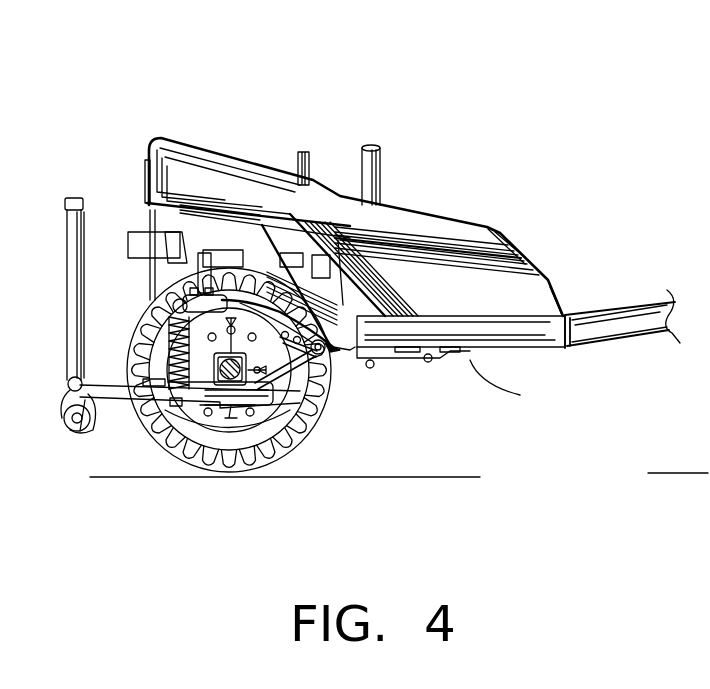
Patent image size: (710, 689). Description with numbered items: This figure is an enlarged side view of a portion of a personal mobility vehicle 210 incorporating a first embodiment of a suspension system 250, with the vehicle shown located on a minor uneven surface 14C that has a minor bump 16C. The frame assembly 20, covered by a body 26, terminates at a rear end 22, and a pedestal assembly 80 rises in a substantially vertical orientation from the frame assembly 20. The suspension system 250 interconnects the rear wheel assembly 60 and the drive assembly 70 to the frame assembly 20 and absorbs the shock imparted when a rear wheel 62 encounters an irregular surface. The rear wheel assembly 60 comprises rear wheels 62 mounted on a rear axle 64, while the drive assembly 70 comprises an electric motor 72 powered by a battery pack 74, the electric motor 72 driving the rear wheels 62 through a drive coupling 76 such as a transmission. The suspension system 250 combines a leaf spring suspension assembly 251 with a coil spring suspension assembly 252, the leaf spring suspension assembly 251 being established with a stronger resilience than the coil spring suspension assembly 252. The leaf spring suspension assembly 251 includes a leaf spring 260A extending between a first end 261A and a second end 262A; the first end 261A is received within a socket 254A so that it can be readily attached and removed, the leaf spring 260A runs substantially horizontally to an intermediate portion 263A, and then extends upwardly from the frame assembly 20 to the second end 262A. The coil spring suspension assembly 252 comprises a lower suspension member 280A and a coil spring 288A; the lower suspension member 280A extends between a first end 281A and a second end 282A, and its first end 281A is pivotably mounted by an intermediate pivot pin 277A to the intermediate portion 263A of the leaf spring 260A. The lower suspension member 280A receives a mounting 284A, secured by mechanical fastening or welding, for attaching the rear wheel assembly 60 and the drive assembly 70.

The personal mobility vehicle 210 is at (530, 51).
The rear end 22 is at (147, 176).
The coil spring 288A is at (147, 157).
The second end 262A is at (223, 292).
The electric motor 72 is at (197, 295).
The drive coupling 76 is at (290, 330).
The leaf spring 260A is at (335, 310).
The leaf spring suspension assembly 251 is at (331, 330).
The pedestal assembly 80 is at (370, 170).
The intermediate pivot pin 277A is at (400, 248).
The battery pack 74 is at (458, 208).
The body 26 is at (525, 287).
The frame assembly 20 is at (583, 340).
The drive assembly 70 is at (140, 284).
The first end 261A is at (408, 355).
The socket 254A is at (395, 360).
The suspension system 250 is at (390, 396).
The minor uneven surface 14C is at (467, 477).
The intermediate portion 263A is at (335, 355).
The first end 281A is at (320, 355).
The coil spring suspension assembly 252 is at (283, 420).
The mounting 284A is at (245, 412).
The minor bump 16C is at (213, 455).
The rear axle 64 is at (160, 420).
The rear wheel 62 is at (108, 440).
The lower suspension member 280A is at (125, 440).
The rear wheel assembly 60 is at (85, 495).
The second end 282A is at (150, 415).